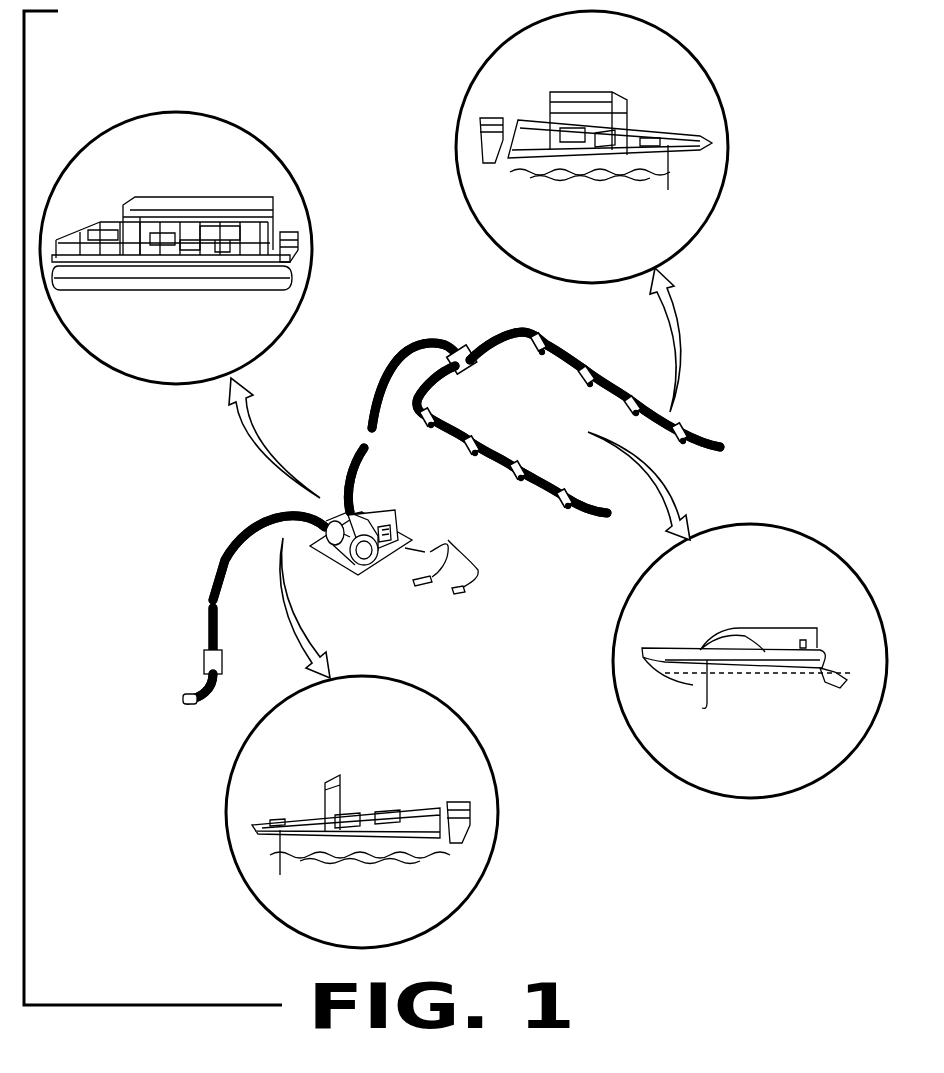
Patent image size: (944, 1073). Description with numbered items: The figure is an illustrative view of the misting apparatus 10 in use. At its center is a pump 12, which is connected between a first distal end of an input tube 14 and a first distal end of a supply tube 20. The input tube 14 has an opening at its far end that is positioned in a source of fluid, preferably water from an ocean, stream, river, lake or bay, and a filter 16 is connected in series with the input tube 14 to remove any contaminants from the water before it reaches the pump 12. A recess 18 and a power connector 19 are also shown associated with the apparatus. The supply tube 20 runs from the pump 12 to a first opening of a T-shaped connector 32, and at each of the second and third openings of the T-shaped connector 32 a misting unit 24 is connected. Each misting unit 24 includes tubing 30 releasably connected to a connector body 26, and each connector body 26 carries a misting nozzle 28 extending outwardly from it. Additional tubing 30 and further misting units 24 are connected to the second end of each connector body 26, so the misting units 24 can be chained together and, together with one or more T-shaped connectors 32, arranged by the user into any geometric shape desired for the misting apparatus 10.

The misting apparatus 10 is at (746, 498).
The pump 12 is at (362, 568).
The input tube 14 is at (248, 530).
The filter 16 is at (222, 660).
The recess 18 is at (186, 698).
The power connector 19 is at (477, 580).
The supply tube 20 is at (390, 360).
The misting unit 24 is at (557, 338).
The connector body 26 is at (541, 348).
The misting nozzle 28 is at (547, 355).
The tubing 30 is at (492, 338).
The T-shaped connector 32 is at (462, 366).